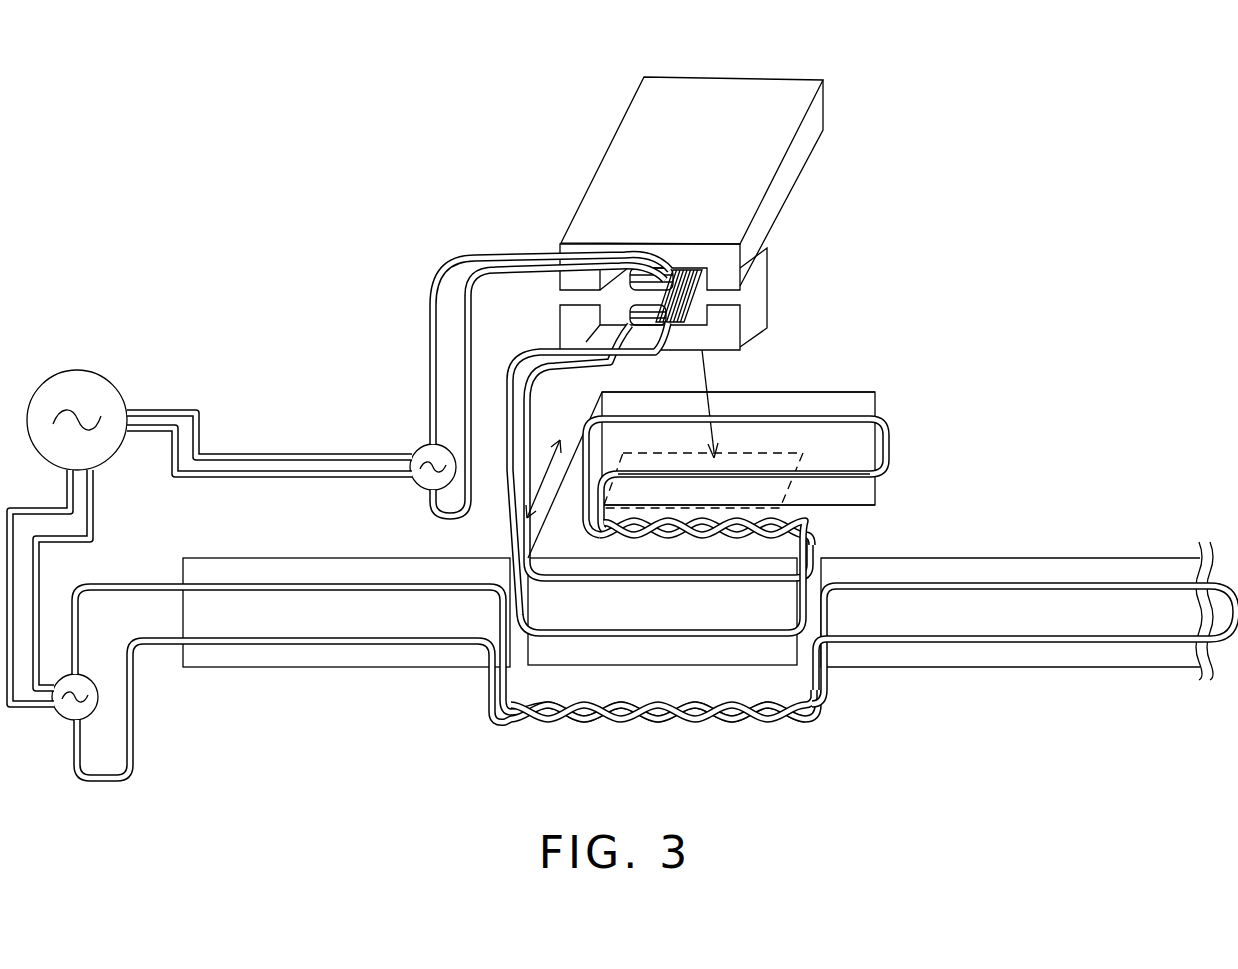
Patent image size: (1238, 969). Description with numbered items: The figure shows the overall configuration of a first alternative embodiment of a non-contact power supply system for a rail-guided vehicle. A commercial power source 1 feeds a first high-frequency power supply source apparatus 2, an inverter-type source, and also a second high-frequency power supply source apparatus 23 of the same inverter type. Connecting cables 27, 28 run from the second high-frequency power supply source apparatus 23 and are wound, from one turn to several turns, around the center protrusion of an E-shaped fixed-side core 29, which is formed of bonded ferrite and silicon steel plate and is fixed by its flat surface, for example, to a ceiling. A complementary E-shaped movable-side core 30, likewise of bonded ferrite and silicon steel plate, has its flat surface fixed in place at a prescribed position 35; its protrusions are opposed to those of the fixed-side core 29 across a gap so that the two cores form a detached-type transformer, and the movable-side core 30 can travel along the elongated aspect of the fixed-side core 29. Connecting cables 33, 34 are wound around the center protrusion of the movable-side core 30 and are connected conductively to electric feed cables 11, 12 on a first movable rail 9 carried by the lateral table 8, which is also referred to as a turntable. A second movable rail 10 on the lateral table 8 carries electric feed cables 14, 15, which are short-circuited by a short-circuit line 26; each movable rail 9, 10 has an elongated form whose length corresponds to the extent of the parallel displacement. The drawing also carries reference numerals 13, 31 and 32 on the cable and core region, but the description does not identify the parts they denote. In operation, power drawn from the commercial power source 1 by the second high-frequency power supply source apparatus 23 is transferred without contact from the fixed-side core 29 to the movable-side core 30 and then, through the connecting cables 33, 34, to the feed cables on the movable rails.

The commercial power source 1 is at (96, 374).
The first high-frequency power supply source apparatus 2 is at (62, 718).
The lateral table 8 is at (855, 407).
The first movable rail 9 is at (762, 652).
The second movable rail 10 is at (862, 498).
The electric feed cable 11 is at (702, 587).
The electric feed cable 12 is at (640, 638).
The cable 13 is at (818, 552).
The electric feed cable 14 is at (795, 418).
The electric feed cable 15 is at (857, 470).
The second high-frequency power supply source apparatus 23 is at (413, 443).
The short-circuit line 26 is at (887, 430).
The connecting cable 27 is at (455, 263).
The connecting cable 28 is at (445, 512).
The fixed-side core 29 is at (676, 78).
The movable-side core 30 is at (769, 290).
The coil 31 is at (642, 272).
The core 32 is at (708, 342).
The connecting cable 33 is at (532, 364).
The connecting cable 34 is at (547, 373).
The prescribed position 35 is at (787, 487).